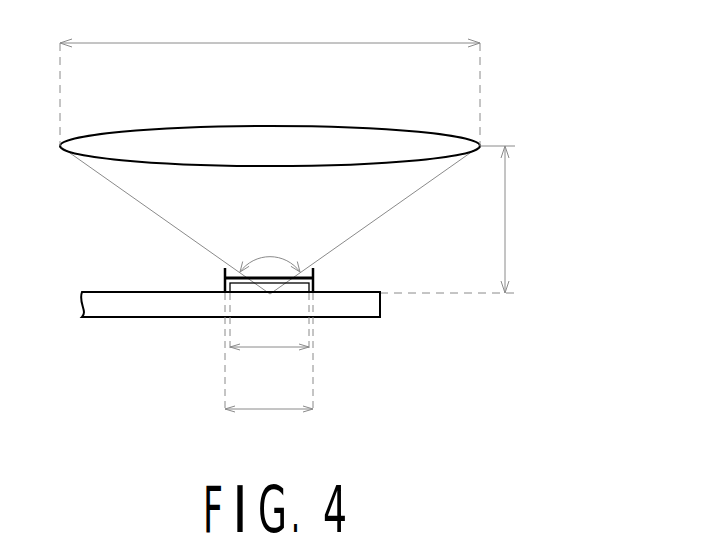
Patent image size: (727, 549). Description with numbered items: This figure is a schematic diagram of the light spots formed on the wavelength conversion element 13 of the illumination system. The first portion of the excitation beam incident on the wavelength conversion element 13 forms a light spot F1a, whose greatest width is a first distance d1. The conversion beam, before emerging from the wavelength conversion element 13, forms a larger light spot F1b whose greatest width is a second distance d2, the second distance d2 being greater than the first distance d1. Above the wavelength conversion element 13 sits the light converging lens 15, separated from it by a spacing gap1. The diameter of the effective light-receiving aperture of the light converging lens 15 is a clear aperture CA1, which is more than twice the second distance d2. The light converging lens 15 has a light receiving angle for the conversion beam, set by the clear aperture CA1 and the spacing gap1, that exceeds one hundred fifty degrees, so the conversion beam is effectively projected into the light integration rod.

The light converging lens 15 is at (128, 140).
The wavelength conversion element 13 is at (368, 305).
The light spot F1b is at (227, 270).
The light spot F1a is at (242, 288).
The clear aperture CA1 is at (270, 73).
The spacing gap1 is at (484, 219).
The first distance d1 is at (269, 346).
The second distance d2 is at (269, 380).